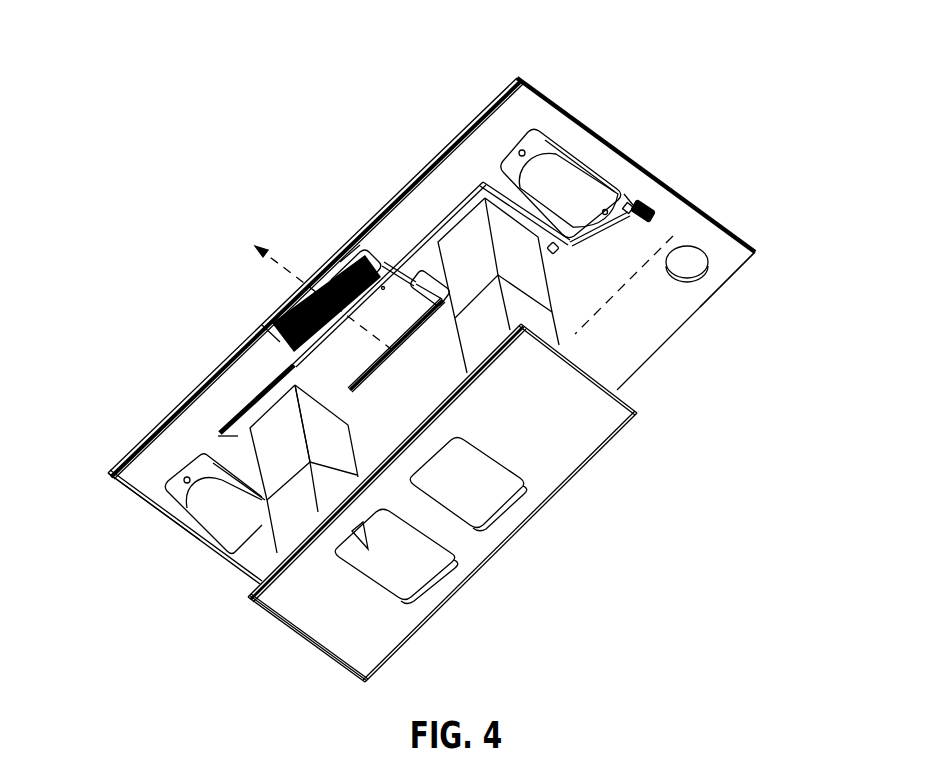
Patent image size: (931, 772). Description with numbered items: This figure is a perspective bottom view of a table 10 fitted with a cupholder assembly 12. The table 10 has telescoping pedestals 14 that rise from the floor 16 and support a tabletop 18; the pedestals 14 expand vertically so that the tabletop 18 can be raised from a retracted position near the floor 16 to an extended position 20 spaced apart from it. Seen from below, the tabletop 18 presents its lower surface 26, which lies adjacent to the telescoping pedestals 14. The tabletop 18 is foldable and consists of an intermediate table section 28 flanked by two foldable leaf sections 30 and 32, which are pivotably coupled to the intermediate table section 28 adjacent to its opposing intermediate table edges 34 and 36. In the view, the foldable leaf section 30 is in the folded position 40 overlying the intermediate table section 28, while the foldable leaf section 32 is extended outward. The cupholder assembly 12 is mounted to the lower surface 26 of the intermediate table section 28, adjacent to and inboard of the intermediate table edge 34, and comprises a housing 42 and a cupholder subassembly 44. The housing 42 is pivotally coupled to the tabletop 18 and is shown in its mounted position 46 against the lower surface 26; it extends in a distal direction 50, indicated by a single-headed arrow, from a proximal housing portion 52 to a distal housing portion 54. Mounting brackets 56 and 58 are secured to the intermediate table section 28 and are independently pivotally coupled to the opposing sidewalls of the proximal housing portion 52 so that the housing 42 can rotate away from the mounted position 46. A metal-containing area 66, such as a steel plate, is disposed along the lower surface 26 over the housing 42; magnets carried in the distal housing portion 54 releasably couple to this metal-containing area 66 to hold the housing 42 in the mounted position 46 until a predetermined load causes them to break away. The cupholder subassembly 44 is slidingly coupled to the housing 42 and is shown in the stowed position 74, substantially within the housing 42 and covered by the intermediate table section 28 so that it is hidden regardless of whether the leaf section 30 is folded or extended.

The table 10 is at (724, 246).
The cupholder assembly 12 is at (360, 358).
The telescoping pedestals 14 is at (290, 518).
The floor 16 is at (618, 386).
The tabletop 18 is at (681, 193).
The extended position 20 is at (626, 40).
The lower surface 26 is at (731, 263).
The intermediate table section 28 is at (630, 172).
The foldable leaf section 30 is at (512, 78).
The foldable leaf section 32 is at (684, 308).
The intermediate table edge 34 is at (108, 473).
The intermediate table edge 36 is at (692, 228).
The folded position 40 is at (451, 103).
The housing 42 is at (384, 264).
The cupholder subassembly 44 is at (307, 271).
The mounted position 46 is at (270, 332).
The distal direction 50 is at (280, 272).
The proximal housing portion 52 is at (288, 364).
The distal housing portion 54 is at (350, 263).
The mounting bracket 56 is at (312, 390).
The mounting bracket 58 is at (398, 300).
The metal-containing area 66 is at (535, 127).
The stowed position 74 is at (203, 344).